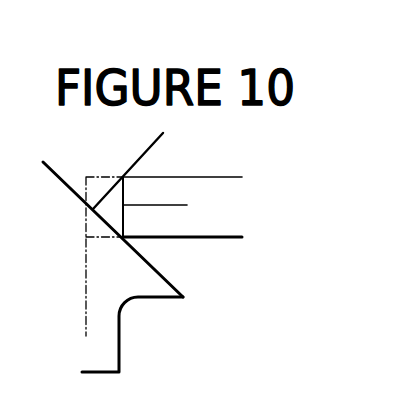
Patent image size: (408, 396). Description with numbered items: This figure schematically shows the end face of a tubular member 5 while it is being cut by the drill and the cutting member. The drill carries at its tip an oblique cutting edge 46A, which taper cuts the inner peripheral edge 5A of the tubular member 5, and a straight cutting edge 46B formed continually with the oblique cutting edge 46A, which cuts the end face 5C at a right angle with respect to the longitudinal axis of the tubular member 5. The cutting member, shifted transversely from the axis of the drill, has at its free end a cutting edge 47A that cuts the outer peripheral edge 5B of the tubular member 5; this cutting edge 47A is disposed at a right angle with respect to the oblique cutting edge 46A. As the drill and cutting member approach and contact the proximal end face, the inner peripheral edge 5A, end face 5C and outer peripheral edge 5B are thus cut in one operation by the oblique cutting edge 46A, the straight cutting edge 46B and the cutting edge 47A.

The tubular member 5 is at (215, 182).
The inner peripheral edge 5A is at (125, 236).
The outer peripheral edge 5B is at (125, 178).
The end face 5C is at (169, 207).
The oblique cutting edge 46A is at (163, 275).
The straight cutting edge 46B is at (120, 327).
The cutting edge 47A is at (136, 163).